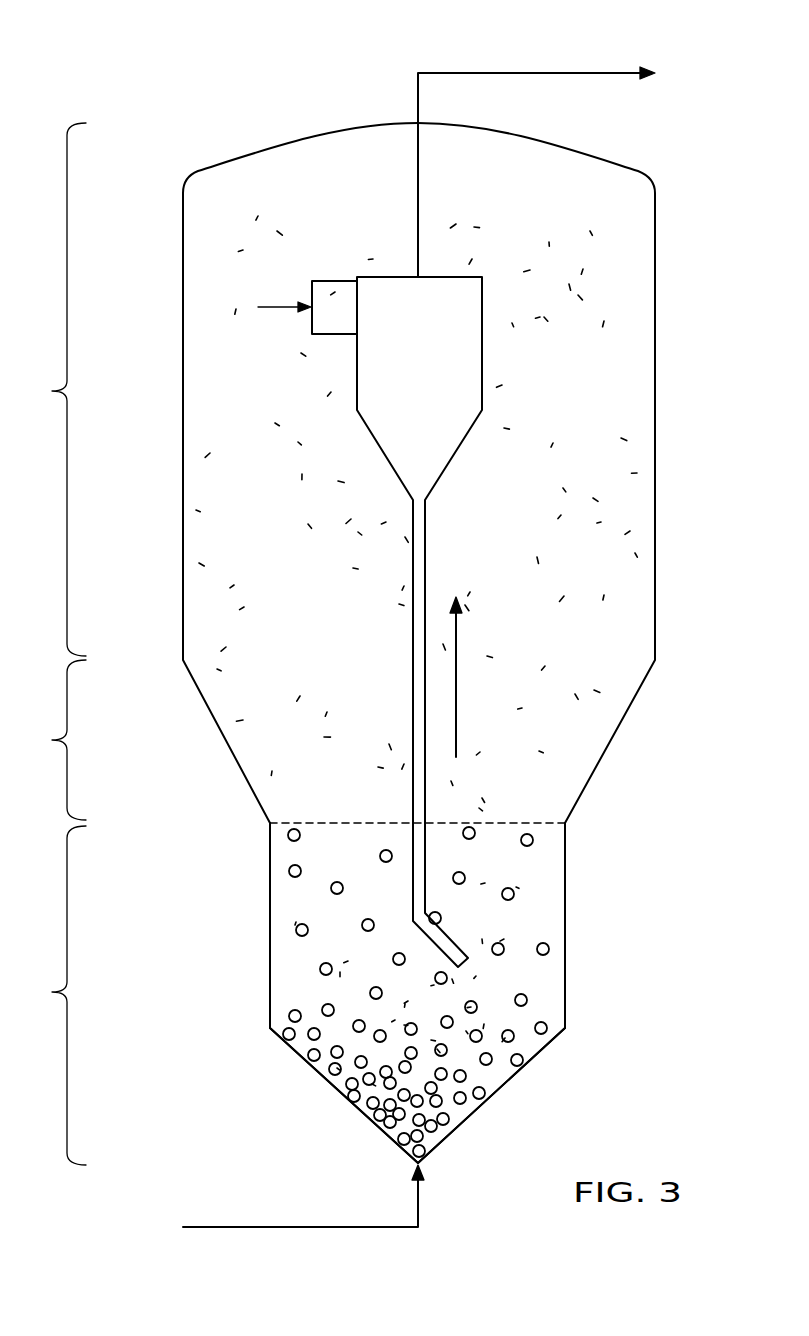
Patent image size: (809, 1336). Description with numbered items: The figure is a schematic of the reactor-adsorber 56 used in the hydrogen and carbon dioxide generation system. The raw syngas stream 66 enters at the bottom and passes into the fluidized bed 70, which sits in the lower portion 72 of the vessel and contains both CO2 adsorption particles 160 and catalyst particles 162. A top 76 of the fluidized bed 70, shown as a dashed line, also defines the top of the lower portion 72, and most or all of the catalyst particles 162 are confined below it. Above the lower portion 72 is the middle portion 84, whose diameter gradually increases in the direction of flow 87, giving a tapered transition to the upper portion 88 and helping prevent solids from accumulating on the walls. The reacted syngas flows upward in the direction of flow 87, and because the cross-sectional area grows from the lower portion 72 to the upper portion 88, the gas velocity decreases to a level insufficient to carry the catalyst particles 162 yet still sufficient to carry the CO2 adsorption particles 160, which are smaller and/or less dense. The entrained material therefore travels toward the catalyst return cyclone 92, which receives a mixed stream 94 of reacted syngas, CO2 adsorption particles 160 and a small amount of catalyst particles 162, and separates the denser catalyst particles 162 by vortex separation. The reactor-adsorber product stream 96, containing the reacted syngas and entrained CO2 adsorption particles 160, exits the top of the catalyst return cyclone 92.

The reactor-adsorber 56 is at (640, 30).
The raw syngas stream 66 is at (300, 1227).
The fluidized bed 70 is at (543, 886).
The lower portion 72 is at (51, 995).
The top of the fluidized bed 76 is at (308, 823).
The middle portion 84 is at (51, 740).
The direction of flow 87 is at (457, 684).
The upper portion 88 is at (51, 389).
The catalyst return cyclone 92 is at (446, 276).
The mixed stream 94 is at (278, 307).
The reactor-adsorber product stream 96 is at (530, 73).
The CO2 adsorption particles 160 is at (595, 453).
The catalyst particles 162 is at (321, 966).